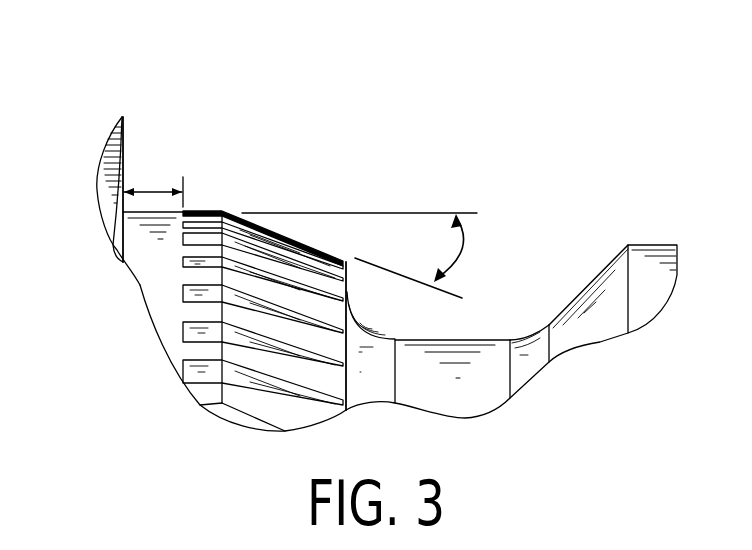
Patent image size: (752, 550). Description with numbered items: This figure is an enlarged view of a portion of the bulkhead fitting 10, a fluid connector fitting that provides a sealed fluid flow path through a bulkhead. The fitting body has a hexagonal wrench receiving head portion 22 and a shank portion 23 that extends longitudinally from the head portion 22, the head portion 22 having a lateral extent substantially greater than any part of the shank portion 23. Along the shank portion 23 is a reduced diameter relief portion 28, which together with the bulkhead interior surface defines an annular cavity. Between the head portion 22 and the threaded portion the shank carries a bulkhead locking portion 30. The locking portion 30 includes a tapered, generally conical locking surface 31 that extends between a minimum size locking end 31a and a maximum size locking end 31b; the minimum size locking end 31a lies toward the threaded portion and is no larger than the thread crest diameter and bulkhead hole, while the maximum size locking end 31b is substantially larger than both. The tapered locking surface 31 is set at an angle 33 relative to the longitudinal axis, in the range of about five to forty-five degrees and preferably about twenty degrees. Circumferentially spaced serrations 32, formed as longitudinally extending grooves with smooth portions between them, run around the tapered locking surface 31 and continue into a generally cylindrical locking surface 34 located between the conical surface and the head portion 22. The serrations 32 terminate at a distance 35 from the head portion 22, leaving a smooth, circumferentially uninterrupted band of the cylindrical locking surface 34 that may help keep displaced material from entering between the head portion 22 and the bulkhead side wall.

The bulkhead fitting 10 is at (560, 82).
The head portion 22 is at (110, 150).
The shank portion 23 is at (655, 245).
The reduced diameter relief portion 28 is at (486, 340).
The bulkhead locking portion 30 is at (354, 163).
The tapered locking surface 31 is at (318, 378).
The minimum size locking end 31a is at (346, 262).
The maximum size locking end 31b is at (221, 211).
The serrations 32 is at (183, 372).
The angle 33 is at (456, 255).
The cylindrical locking surface 34 is at (152, 252).
The distance 35 is at (155, 186).